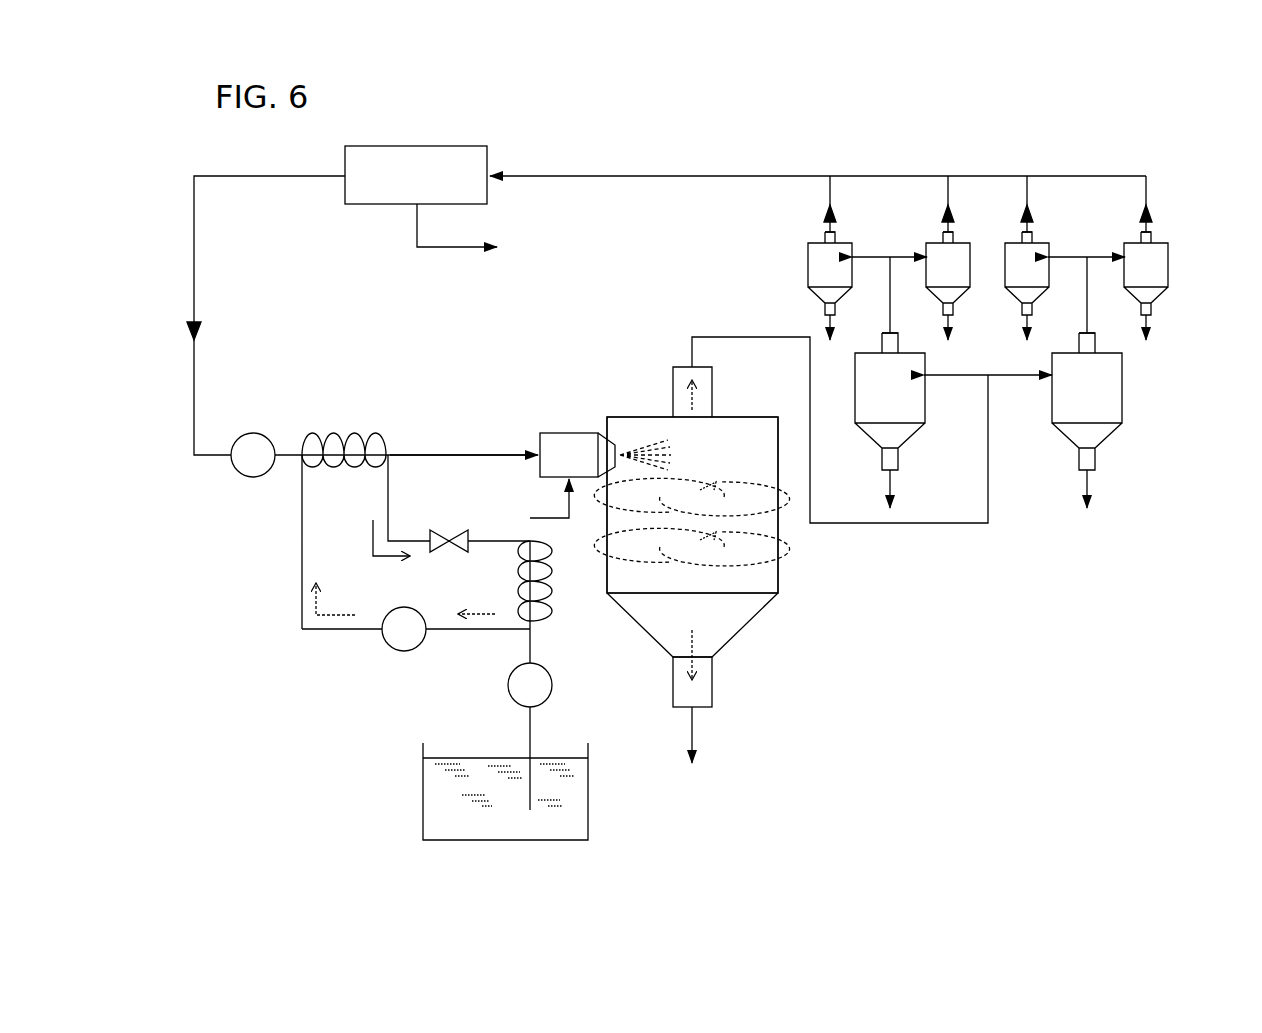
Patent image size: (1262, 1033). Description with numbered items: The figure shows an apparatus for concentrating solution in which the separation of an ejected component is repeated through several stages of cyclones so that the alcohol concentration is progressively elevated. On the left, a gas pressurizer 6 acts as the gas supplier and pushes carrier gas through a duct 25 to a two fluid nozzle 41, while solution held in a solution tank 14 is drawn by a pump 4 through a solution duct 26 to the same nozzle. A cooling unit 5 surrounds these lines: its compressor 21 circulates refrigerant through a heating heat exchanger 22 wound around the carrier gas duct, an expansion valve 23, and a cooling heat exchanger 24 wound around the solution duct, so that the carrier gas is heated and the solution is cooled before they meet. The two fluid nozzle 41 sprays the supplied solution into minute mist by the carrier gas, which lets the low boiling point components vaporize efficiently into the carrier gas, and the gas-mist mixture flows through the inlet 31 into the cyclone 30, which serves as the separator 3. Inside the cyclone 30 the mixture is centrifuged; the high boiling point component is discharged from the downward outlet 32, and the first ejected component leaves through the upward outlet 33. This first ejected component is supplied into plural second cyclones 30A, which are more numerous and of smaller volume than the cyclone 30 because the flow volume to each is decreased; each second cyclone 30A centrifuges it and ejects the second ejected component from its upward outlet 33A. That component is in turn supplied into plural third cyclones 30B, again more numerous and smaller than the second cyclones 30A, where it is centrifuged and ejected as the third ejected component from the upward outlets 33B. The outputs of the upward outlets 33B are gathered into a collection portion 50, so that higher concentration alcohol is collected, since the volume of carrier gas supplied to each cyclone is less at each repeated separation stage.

The separator 3 is at (786, 522).
The pump 4 is at (508, 692).
The cooling unit 5 is at (432, 688).
The gas pressurizer 6 is at (276, 441).
The solution tank 14 is at (590, 803).
The compressor 21 is at (388, 645).
The heating heat exchanger 22 is at (346, 470).
The expansion valve 23 is at (449, 528).
The cooling heat exchanger 24 is at (555, 600).
The duct 25 is at (430, 452).
The solution duct 26 is at (552, 688).
The cyclone 30 is at (790, 555).
The second cyclone 30A is at (910, 398).
The third cyclone 30B is at (808, 262).
The inlet 31 is at (625, 433).
The downward outlet 32 is at (708, 710).
The upward outlet 33 is at (686, 362).
The upward outlet 33A is at (912, 332).
The upward outlet 33B is at (850, 228).
The two fluid nozzle 41 is at (570, 445).
The collection portion 50 is at (344, 190).